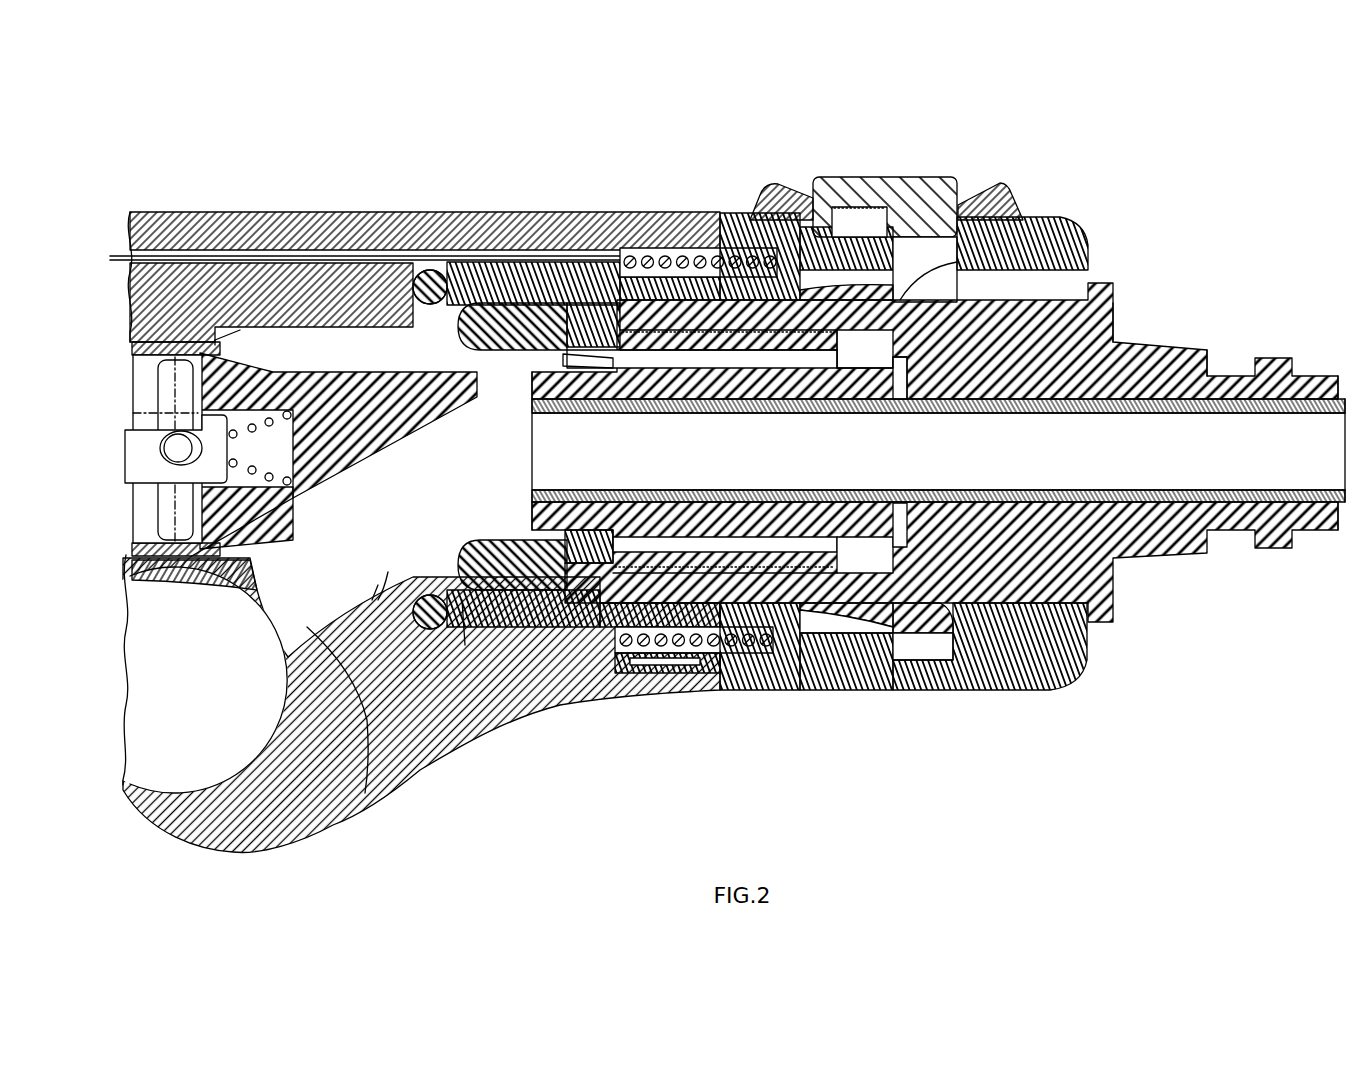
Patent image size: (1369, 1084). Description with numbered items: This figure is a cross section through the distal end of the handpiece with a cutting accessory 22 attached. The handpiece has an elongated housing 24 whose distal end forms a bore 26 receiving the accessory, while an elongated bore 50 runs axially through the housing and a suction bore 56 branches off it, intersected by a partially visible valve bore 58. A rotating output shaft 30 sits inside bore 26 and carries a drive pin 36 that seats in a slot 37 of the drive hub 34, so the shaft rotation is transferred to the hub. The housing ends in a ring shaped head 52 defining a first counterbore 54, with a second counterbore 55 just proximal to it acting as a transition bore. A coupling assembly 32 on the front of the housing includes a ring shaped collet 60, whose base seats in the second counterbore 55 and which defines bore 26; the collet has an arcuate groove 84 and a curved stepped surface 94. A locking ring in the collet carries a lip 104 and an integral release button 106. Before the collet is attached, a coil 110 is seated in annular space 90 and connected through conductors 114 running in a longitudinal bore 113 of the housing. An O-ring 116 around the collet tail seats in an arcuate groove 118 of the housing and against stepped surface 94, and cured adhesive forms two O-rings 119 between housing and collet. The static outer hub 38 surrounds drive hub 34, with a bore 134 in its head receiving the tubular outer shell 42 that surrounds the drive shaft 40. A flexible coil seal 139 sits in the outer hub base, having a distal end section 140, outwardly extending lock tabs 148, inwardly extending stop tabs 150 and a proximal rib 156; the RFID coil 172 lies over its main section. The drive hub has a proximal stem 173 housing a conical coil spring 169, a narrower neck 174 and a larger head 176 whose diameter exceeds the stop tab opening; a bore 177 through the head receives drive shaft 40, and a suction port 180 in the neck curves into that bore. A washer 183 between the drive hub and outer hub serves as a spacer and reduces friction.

The cutting accessory 22 is at (1237, 327).
The housing 24 is at (312, 840).
The bore 26 is at (1060, 283).
The output shaft 30 is at (140, 422).
The coupling assembly 32 is at (973, 758).
The drive hub 34 is at (387, 378).
The drive pin 36 is at (148, 378).
The slot 37 is at (145, 518).
The outer hub 38 is at (1150, 560).
The drive shaft 40 is at (1315, 415).
The outer shell 42 is at (1340, 508).
The bore 50 is at (160, 570).
The head 52 is at (668, 212).
The first counterbore 54 is at (708, 213).
The second counterbore 55 is at (522, 240).
The suction bore 56 is at (365, 793).
The valve bore 58 is at (147, 633).
The collet 60 is at (1075, 212).
The groove 84 is at (920, 647).
The annular space 90 is at (693, 653).
The stepped surface 94 is at (388, 572).
The lip 104 is at (987, 650).
The release button 106 is at (916, 177).
The coil 110 is at (573, 693).
The bore 113 is at (272, 240).
The conductors 114 is at (365, 240).
The O-ring 116 is at (440, 580).
The groove 118 is at (378, 585).
The O-rings 119 is at (668, 693).
The bore 134 is at (1140, 430).
The coil seal 139 is at (465, 645).
The distal end section 140 is at (800, 670).
The lock tabs 148 is at (578, 240).
The stop tabs 150 is at (595, 530).
The rib 156 is at (468, 330).
The coil spring 169 is at (333, 456).
The coil 172 is at (697, 345).
The stem 173 is at (158, 213).
The neck 174 is at (730, 693).
The head 176 is at (875, 660).
The bore 177 is at (593, 453).
The suction port 180 is at (350, 503).
The washer 183 is at (900, 385).